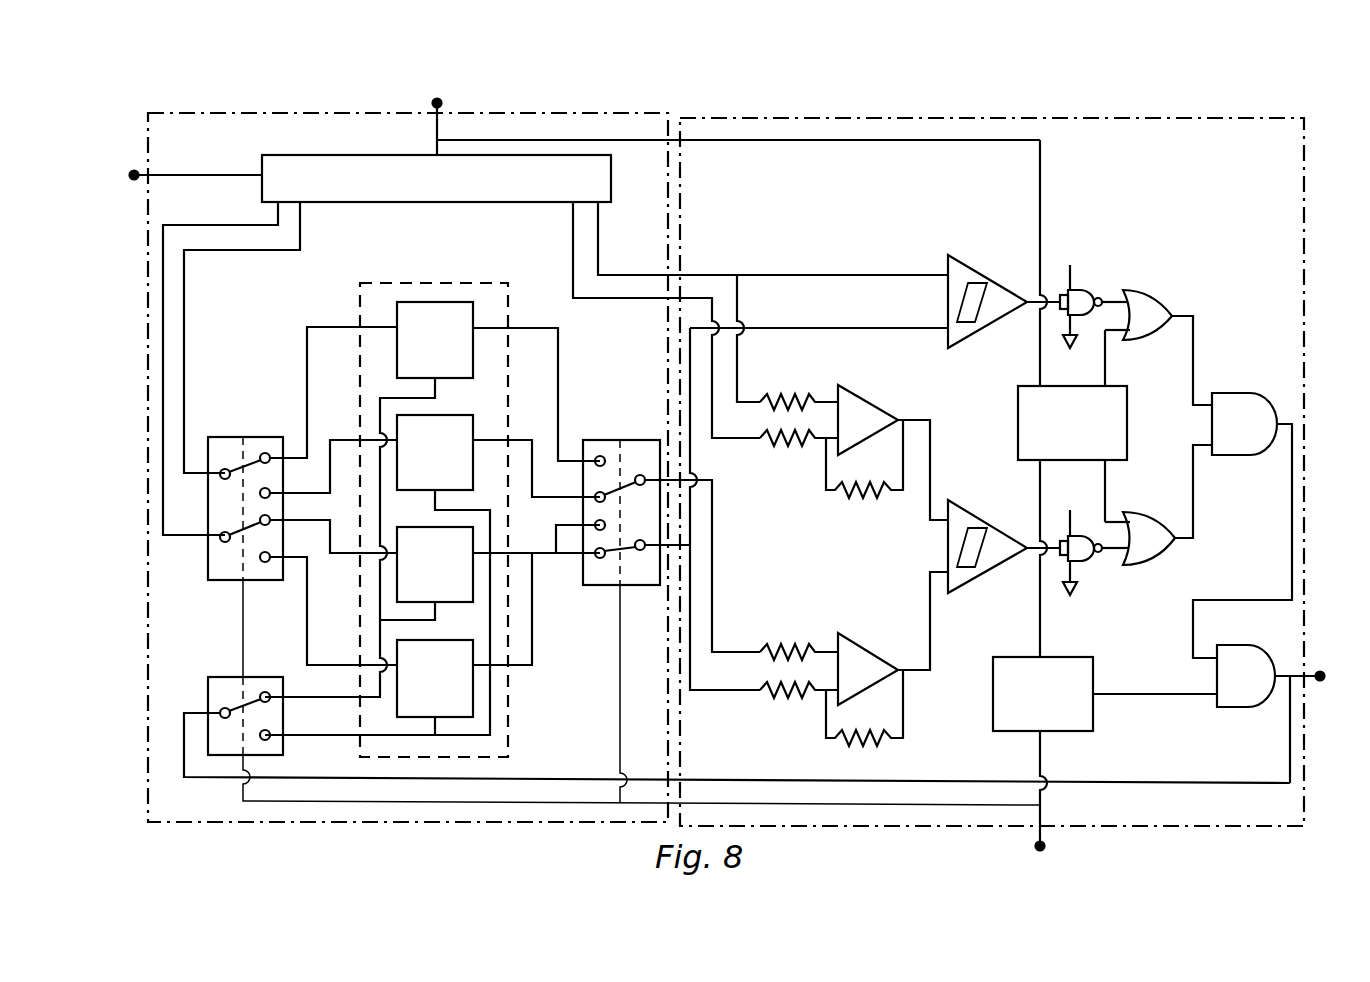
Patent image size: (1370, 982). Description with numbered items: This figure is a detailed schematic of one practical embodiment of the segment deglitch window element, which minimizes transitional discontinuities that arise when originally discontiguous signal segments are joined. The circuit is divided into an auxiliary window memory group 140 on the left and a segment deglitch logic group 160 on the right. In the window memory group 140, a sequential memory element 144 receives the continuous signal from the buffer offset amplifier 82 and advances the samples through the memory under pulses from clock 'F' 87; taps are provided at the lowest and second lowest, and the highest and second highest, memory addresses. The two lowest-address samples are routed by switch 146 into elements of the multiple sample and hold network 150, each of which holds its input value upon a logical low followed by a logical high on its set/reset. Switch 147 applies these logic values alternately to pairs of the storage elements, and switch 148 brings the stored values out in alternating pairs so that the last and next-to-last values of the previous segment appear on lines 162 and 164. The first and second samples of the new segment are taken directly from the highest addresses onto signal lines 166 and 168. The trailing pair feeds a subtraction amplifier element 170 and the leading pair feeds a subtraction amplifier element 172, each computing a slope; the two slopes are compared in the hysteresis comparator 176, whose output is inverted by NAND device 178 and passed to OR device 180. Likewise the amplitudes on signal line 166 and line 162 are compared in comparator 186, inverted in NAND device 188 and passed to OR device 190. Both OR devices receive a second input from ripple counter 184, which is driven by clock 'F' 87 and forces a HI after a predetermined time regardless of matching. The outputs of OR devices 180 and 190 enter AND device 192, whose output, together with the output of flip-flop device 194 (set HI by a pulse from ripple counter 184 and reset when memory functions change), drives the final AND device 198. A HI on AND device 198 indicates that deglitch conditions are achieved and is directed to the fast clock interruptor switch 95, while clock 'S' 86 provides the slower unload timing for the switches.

The window memory group 140 is at (206, 113).
The segment deglitch logic group 160 is at (1207, 124).
The buffer offset amplifier 82 is at (177, 154).
The clock 'F' 87 is at (523, 125).
The sequential memory element 144 is at (601, 337).
The multiple sample and hold network 150 is at (432, 510).
The switch 146 is at (302, 496).
The switch 147 is at (737, 692).
The switch 148 is at (621, 621).
The signal line 166 is at (773, 306).
The signal line 168 is at (705, 324).
The line 162 is at (796, 505).
The line 164 is at (741, 570).
The subtraction amplifier element 172 is at (887, 452).
The subtraction amplifier element 170 is at (887, 659).
The comparator 186 is at (985, 277).
The hysteresis comparator 176 is at (997, 528).
The NAND device 188 is at (1093, 299).
The NAND device 178 is at (1093, 545).
The OR device 190 is at (1158, 347).
The OR device 180 is at (1158, 505).
The ripple counter 184 is at (1072, 398).
The AND device 192 is at (1242, 525).
The flip-flop device 194 is at (1105, 694).
The final AND device 198 is at (1268, 714).
The fast clock interruptor switch 95 is at (1341, 696).
The clock 'S' 86 is at (1116, 794).